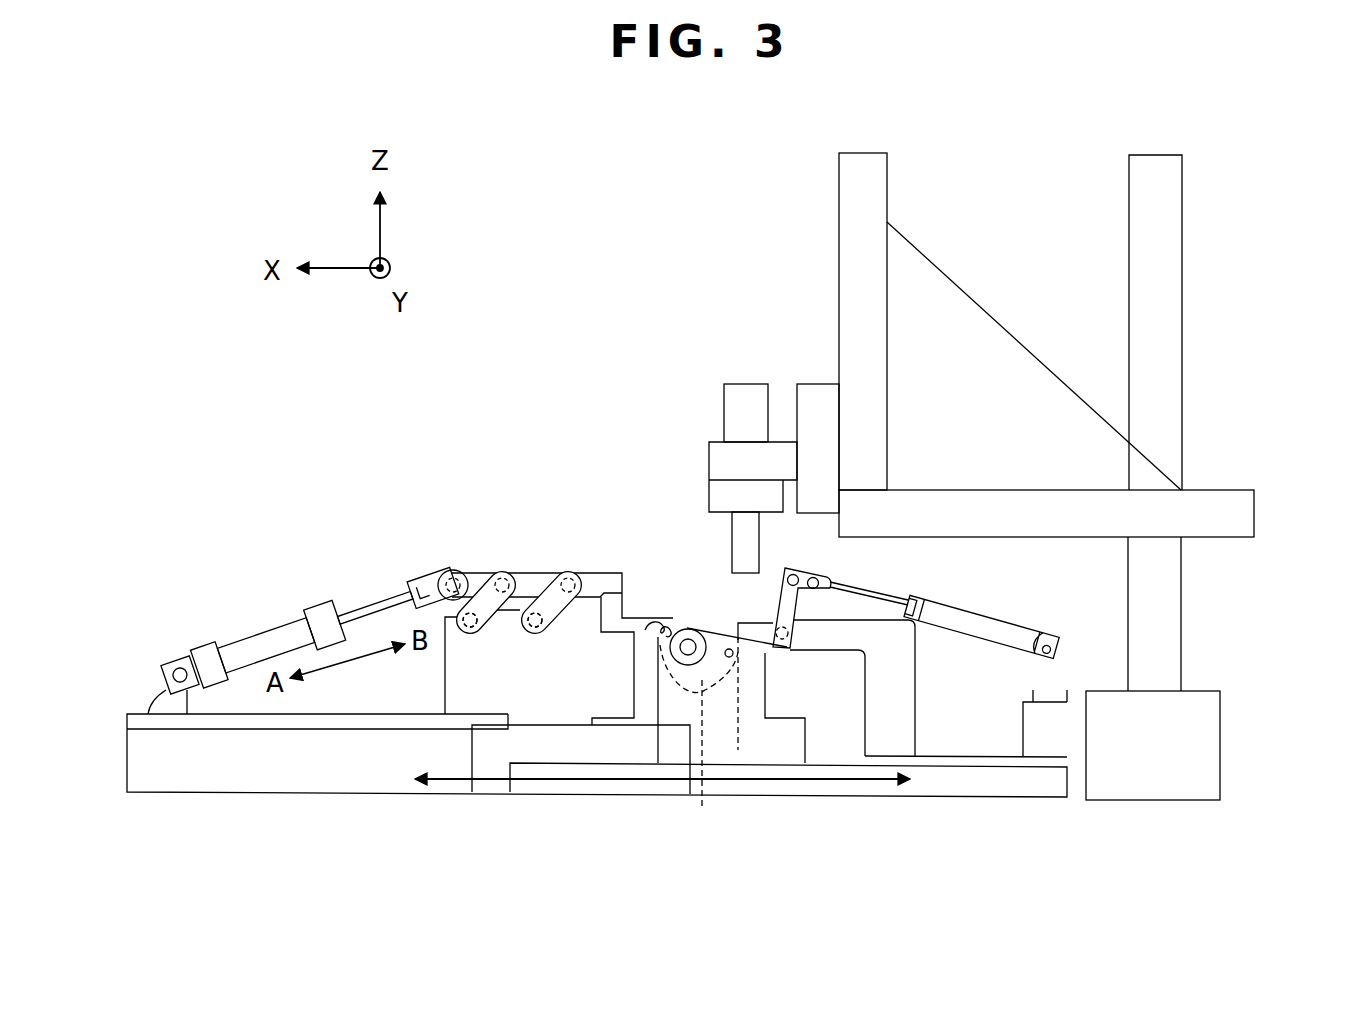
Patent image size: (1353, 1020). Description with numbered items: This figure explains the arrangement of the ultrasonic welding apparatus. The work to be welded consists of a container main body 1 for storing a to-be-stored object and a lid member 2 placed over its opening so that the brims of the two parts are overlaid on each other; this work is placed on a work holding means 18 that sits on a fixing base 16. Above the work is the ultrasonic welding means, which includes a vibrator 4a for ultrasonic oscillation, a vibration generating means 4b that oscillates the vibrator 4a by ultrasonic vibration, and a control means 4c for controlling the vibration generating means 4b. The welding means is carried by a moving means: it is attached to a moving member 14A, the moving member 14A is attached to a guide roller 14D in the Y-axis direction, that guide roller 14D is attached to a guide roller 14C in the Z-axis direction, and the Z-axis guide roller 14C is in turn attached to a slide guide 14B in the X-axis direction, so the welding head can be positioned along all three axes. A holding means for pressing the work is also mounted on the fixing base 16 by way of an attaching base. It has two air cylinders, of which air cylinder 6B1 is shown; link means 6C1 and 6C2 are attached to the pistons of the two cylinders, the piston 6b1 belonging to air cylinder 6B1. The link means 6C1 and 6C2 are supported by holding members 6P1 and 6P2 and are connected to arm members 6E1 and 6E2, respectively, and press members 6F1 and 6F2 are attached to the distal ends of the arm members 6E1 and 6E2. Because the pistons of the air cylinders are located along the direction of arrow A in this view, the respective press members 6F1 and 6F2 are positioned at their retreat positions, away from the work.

The container main body 1 is at (723, 743).
The lid member 2 is at (723, 743).
The vibrator 4a is at (738, 545).
The vibration generating means 4b is at (739, 391).
The control means 4c is at (722, 384).
The air cylinder 6B1 is at (258, 642).
The piston 6b1 is at (370, 607).
The link means 6C1 is at (556, 625).
The link means 6C2 is at (548, 736).
The arm member 6E1 is at (480, 573).
The arm member 6E2 is at (500, 565).
The press member 6F1 is at (637, 620).
The press member 6F2 is at (562, 550).
The holding member 6P1 is at (458, 693).
The holding member 6P2 is at (419, 728).
The moving member 14A is at (720, 461).
The slide guide 14B is at (1218, 532).
The guide roller 14C is at (866, 160).
The guide roller 14D is at (815, 392).
The fixing base 16 is at (295, 780).
The work holding means 18 is at (778, 748).